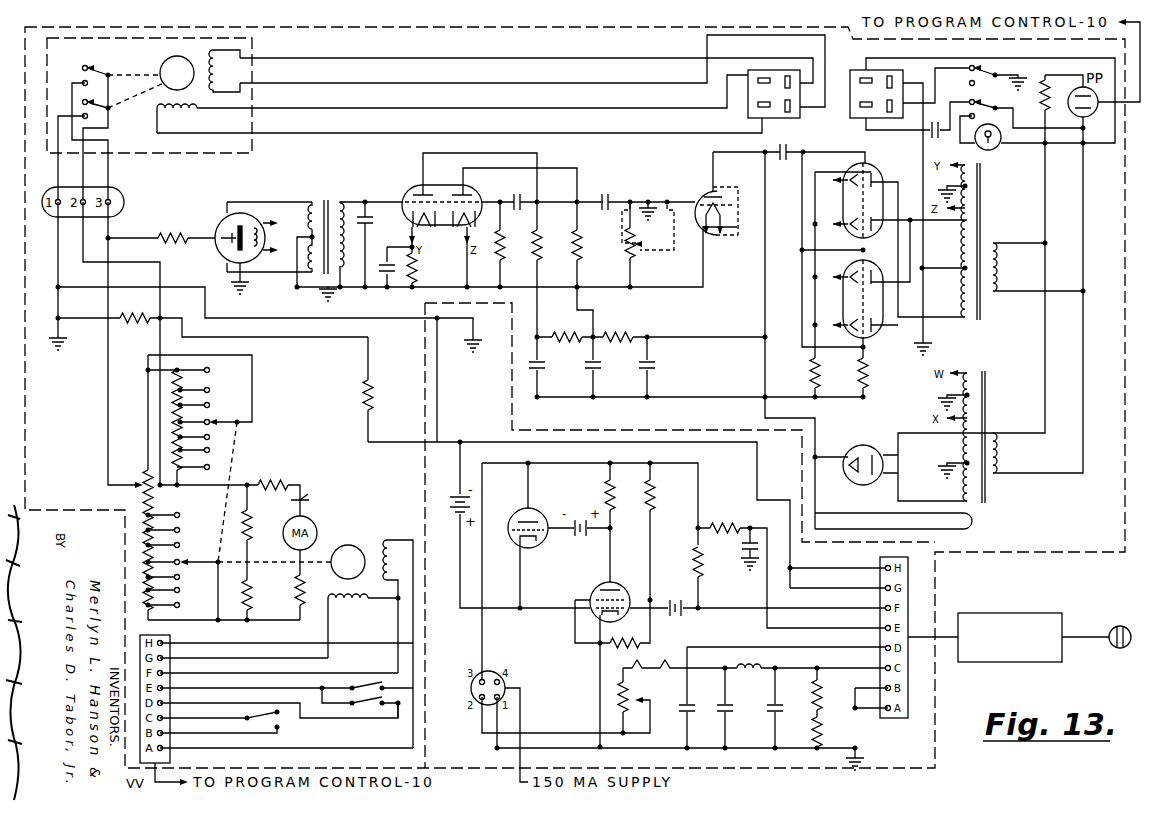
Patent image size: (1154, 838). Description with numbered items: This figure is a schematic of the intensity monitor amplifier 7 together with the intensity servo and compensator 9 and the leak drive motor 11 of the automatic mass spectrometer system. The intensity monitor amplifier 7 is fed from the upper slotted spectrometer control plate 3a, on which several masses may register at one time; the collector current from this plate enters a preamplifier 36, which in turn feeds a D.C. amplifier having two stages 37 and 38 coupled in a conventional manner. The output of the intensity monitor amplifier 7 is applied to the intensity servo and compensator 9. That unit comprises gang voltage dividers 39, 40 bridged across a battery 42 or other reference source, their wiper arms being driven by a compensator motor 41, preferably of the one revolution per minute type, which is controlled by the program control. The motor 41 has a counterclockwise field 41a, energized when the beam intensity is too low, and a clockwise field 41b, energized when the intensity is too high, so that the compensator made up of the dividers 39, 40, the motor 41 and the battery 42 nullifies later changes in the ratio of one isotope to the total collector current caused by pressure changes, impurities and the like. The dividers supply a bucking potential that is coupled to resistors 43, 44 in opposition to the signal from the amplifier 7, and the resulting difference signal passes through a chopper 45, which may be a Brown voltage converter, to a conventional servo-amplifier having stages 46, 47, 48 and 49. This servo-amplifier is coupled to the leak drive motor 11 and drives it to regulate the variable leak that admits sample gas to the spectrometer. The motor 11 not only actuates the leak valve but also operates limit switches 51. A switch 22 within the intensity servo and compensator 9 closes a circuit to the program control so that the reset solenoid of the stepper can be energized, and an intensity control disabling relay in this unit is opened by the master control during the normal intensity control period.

The limit switches 51 is at (79, 86).
The leak drive motor 11 is at (164, 63).
The intensity servo and compensator 9 is at (510, 48).
The intensity monitor amplifier 7 is at (474, 421).
The chopper 45 is at (218, 220).
The servo-amplifier stage 46 is at (408, 189).
The servo-amplifier stage 47 is at (704, 190).
The servo-amplifier stage 48 is at (875, 168).
The servo-amplifier stage 49 is at (866, 343).
The resistor 44 is at (145, 312).
The gang voltage divider 40 is at (1044, 95).
The resistor 43 is at (374, 386).
The gang voltage divider 39 is at (150, 518).
The battery 42 is at (310, 502).
The compensator motor 41 is at (351, 544).
The counterclockwise field 41a is at (387, 540).
The clockwise field 41b is at (347, 605).
The D.C. amplifier stage 38 is at (538, 512).
The D.C. amplifier stage 37 is at (601, 583).
The preamplifier 36 is at (1007, 614).
The slotted control plate 3a is at (1111, 627).
The switch Sw22 22 is at (281, 728).